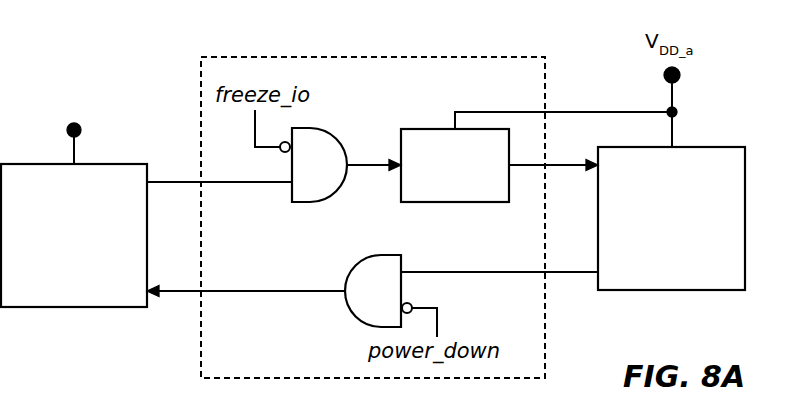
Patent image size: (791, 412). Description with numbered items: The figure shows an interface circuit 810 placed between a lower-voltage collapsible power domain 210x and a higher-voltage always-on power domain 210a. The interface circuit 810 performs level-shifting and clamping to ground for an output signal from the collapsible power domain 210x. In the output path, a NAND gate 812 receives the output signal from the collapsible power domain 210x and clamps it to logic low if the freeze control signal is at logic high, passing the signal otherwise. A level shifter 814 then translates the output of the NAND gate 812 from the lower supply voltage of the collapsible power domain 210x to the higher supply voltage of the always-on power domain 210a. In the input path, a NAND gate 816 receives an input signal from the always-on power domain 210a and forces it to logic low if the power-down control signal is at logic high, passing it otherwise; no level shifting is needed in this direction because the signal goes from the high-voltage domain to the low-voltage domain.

The collapsible power domain 210x is at (125, 149).
The always-on power domain 210a is at (722, 133).
The interface circuit 810 is at (366, 56).
The NAND gate 812 is at (343, 140).
The level shifter 814 is at (431, 128).
The NAND gate 816 is at (352, 264).